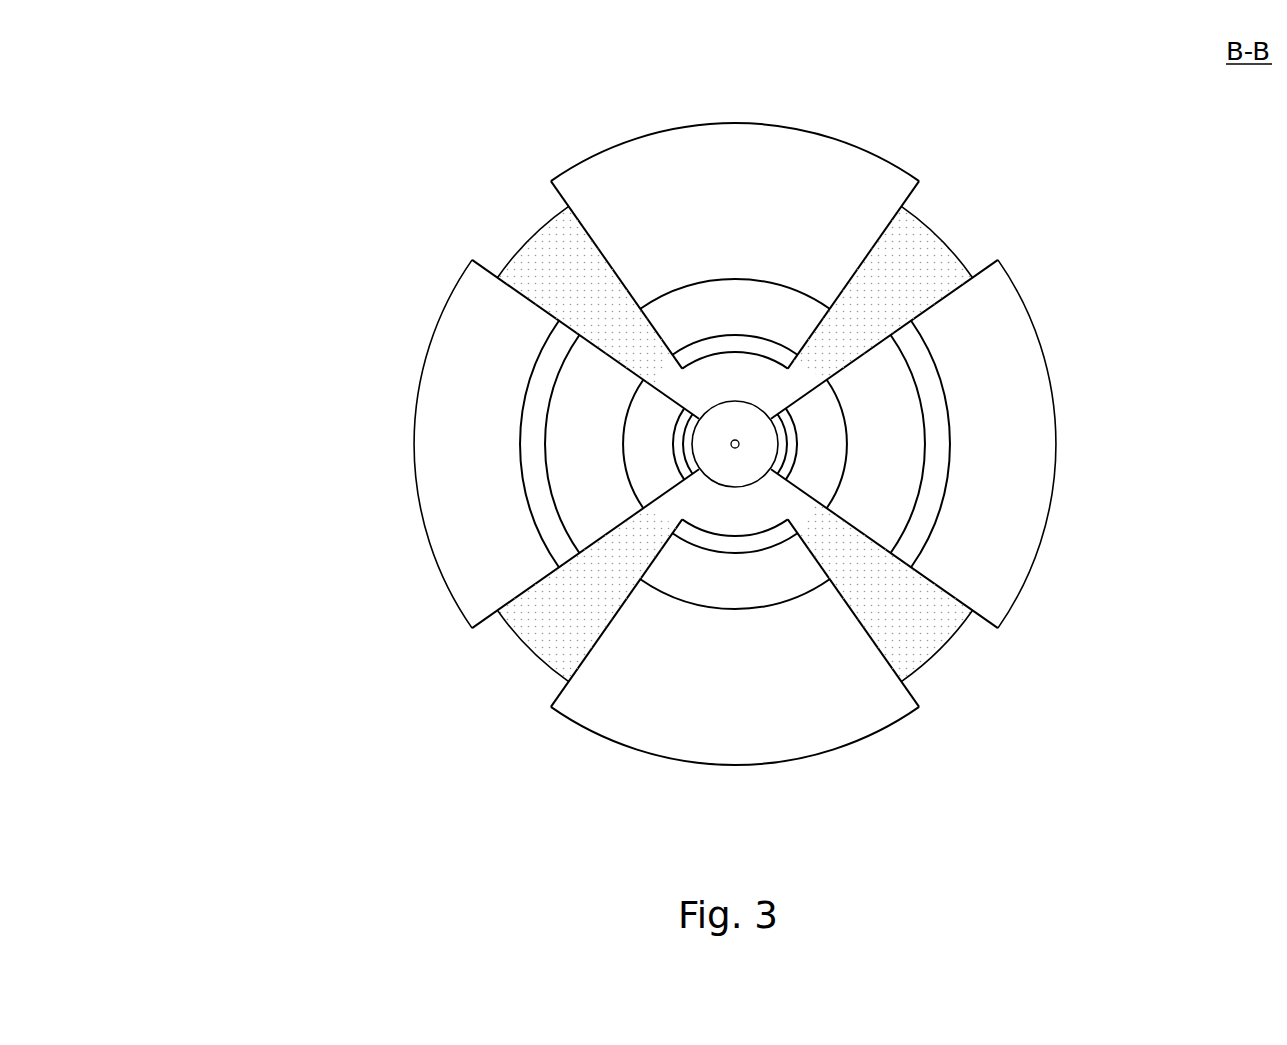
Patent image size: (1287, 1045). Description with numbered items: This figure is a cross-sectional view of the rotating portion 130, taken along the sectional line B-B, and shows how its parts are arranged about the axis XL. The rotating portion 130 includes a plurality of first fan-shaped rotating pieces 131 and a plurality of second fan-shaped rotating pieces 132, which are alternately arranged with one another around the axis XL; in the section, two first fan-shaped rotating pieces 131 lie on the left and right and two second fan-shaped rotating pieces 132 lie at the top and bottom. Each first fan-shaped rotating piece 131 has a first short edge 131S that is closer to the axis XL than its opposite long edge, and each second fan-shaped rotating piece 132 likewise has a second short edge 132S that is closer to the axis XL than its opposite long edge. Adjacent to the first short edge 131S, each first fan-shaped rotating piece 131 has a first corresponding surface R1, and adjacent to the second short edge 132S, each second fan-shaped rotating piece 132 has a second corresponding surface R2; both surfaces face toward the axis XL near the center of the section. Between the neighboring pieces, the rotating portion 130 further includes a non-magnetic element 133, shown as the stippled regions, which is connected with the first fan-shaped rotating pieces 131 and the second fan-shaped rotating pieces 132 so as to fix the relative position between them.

The rotating portion 130 is at (238, 650).
The first fan-shaped rotating piece 131 is at (1045, 462).
The second fan-shaped rotating piece 132 is at (690, 140).
The non-magnetic element 133 is at (548, 636).
The first short edge 131S is at (772, 462).
The second short edge 132S is at (697, 358).
The first corresponding surface R1 is at (787, 430).
The second corresponding surface R2 is at (765, 348).
The axis XL is at (735, 444).